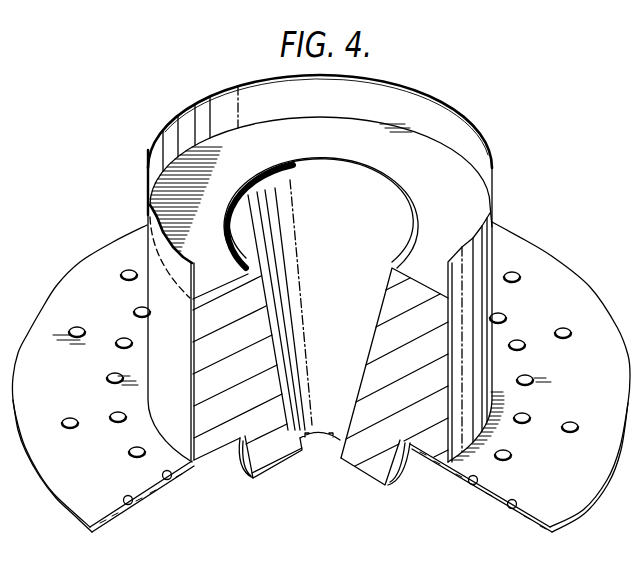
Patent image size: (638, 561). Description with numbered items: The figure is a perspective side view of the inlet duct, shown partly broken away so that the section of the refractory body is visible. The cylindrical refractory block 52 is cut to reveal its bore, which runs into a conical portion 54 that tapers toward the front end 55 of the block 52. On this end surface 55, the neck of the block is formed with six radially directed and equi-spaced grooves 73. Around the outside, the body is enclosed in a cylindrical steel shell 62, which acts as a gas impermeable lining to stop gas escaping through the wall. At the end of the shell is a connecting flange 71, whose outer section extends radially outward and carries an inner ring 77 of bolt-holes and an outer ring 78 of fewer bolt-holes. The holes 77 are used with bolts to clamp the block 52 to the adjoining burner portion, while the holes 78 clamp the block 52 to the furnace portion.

The cylindrical refractory block 52 is at (216, 453).
The conical portion 54 is at (334, 217).
The front end 55 is at (368, 476).
The cylindrical steel shell 62 is at (494, 210).
The connecting flange 71 is at (484, 490).
The radially directed grooves 73 is at (313, 441).
The inner ring of bolt-holes 77 is at (540, 406).
The outer ring of bolt-holes 78 is at (566, 446).